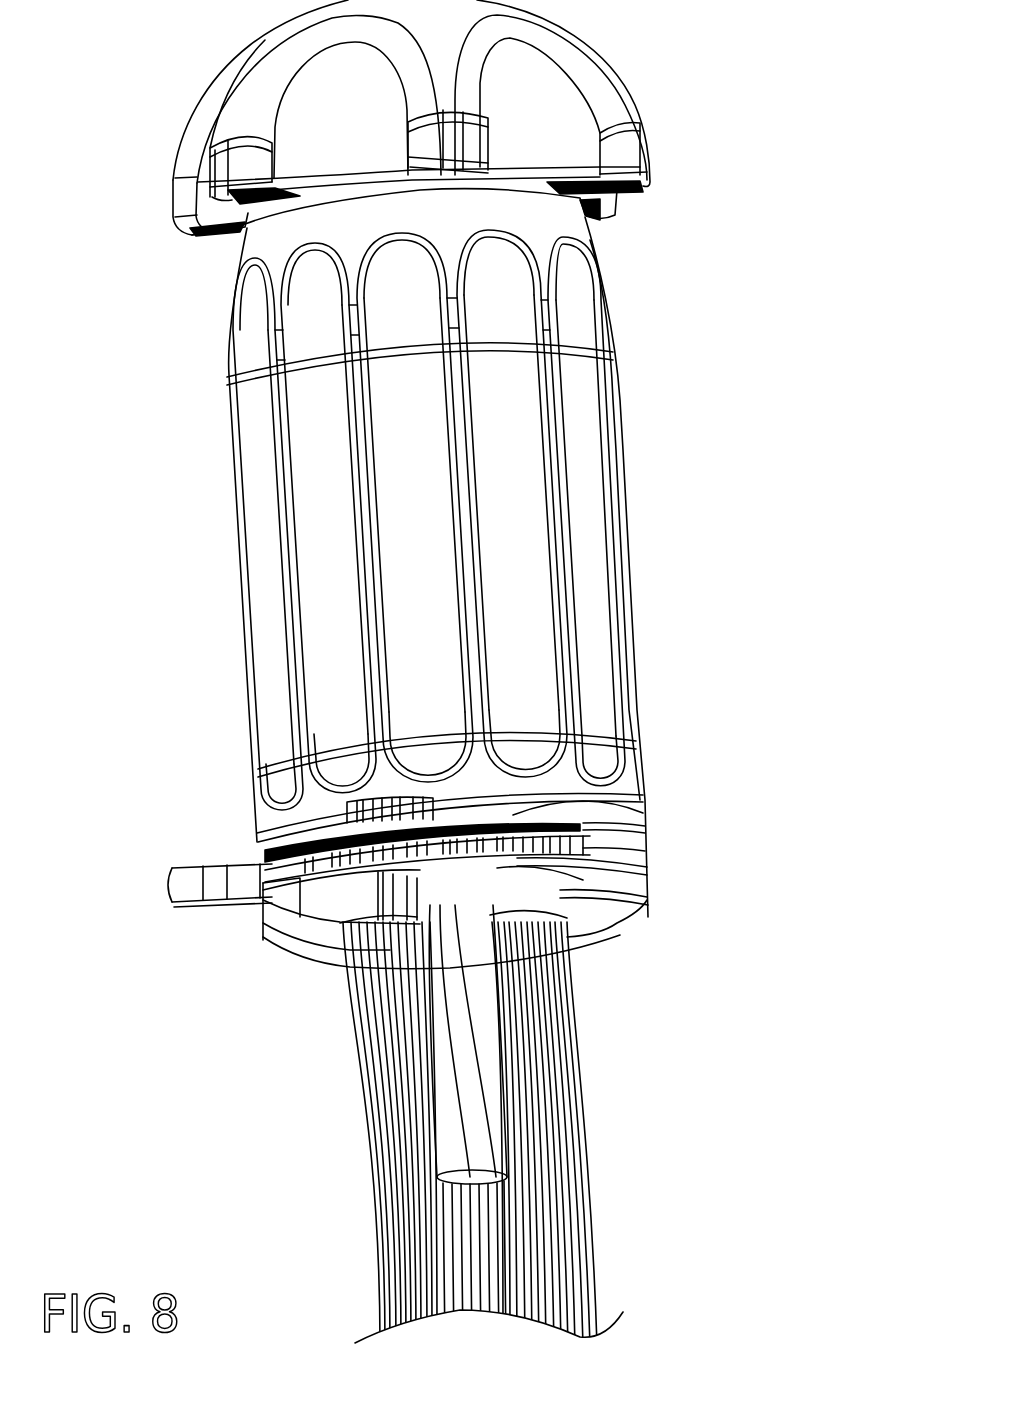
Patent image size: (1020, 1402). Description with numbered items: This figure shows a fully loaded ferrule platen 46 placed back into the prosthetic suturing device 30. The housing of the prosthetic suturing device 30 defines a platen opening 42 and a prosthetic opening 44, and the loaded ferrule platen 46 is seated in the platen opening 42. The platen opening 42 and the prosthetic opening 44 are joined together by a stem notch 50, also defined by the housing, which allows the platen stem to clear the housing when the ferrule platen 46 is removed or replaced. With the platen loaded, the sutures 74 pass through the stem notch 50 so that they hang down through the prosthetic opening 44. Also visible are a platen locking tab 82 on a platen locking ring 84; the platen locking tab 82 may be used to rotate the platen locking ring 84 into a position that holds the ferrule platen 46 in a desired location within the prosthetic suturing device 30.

The prosthetic suturing device 30 is at (768, 282).
The platen opening 42 is at (293, 858).
The prosthetic opening 44 is at (344, 958).
The ferrule platen 46 is at (628, 826).
The stem notch 50 is at (428, 893).
The sutures 74 is at (573, 1018).
The platen locking tab 82 is at (186, 887).
The platen locking ring 84 is at (637, 849).